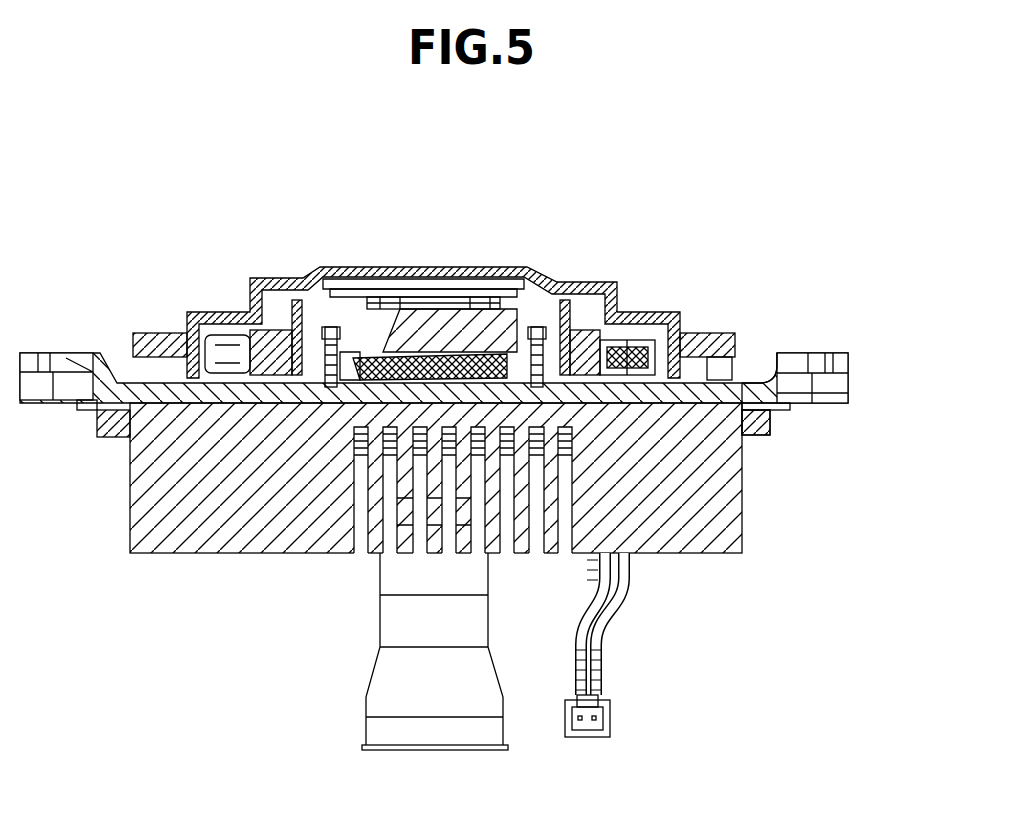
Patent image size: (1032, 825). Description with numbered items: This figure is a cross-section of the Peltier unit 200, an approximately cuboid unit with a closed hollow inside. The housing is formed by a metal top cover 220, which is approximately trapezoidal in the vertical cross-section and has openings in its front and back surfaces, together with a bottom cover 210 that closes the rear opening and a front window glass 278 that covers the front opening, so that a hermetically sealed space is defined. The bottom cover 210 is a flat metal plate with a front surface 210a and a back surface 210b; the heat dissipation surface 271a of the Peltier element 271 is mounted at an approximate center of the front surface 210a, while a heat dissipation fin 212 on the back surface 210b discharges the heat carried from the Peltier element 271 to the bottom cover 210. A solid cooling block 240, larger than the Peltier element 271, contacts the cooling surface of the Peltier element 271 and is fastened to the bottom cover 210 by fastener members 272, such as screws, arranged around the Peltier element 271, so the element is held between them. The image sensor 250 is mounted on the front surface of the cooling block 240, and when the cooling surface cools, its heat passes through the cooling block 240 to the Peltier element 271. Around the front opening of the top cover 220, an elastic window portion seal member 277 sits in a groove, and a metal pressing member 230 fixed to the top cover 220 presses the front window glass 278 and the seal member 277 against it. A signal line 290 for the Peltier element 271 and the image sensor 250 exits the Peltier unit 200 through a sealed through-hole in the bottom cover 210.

The Peltier unit 200 is at (738, 180).
The bottom cover 210 is at (800, 384).
The front surface 210a is at (752, 378).
The back surface 210b is at (712, 415).
The heat dissipation fin 212 is at (690, 520).
The top cover 220 is at (711, 345).
The pressing member 230 is at (600, 280).
The cooling block 240 is at (300, 312).
The image sensor 250 is at (453, 285).
The Peltier element 271 is at (418, 338).
The heat dissipation surface 271a is at (383, 362).
The fastener members 272 is at (342, 366).
The window portion seal member 277 is at (540, 268).
The front window glass 278 is at (393, 268).
The signal line 290 is at (363, 733).